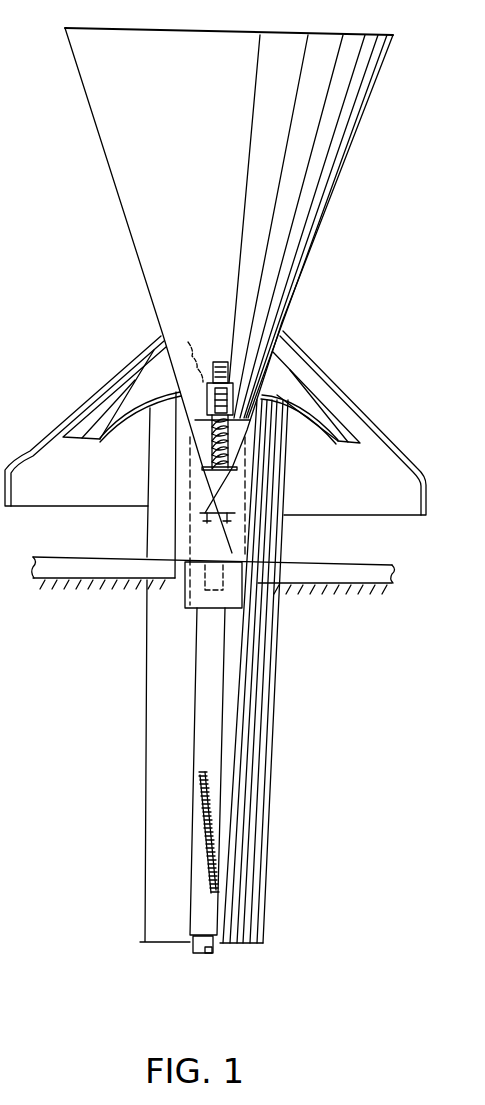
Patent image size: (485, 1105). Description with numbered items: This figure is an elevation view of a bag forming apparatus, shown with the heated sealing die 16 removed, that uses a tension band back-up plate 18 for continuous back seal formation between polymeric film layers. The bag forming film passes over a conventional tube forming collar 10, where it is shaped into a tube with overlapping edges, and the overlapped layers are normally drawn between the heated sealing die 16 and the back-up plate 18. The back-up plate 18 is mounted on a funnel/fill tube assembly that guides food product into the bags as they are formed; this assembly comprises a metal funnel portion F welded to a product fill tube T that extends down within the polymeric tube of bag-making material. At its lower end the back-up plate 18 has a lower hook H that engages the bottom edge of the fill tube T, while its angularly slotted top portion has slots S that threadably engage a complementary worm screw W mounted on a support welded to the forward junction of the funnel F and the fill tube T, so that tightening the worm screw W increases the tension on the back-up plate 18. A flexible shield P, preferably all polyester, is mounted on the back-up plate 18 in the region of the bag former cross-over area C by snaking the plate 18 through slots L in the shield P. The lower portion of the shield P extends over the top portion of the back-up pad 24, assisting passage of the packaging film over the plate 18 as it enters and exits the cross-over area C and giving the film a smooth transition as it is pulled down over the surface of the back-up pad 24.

The funnel portion F is at (337, 183).
The tube forming collar 10 is at (346, 394).
The back-up plate 18 is at (222, 362).
The worm screw W is at (187, 354).
The slots S is at (230, 445).
The product fill tube T is at (262, 383).
The slots in the shield L is at (190, 449).
The former cross-over area C is at (205, 512).
The flexible shield P is at (255, 605).
The back-up pad 24 is at (215, 737).
The lower hook H is at (197, 954).
The heated sealing die 16 is at (472, 1043).